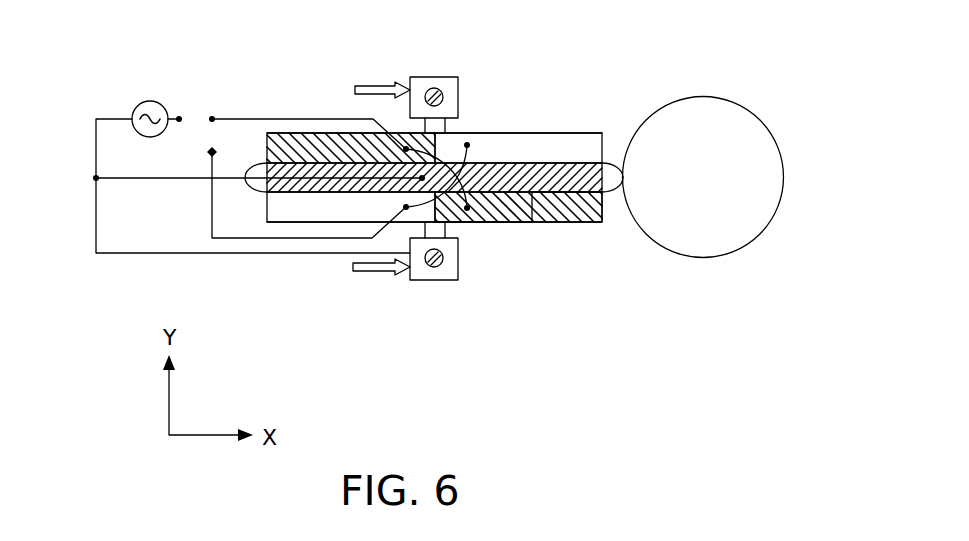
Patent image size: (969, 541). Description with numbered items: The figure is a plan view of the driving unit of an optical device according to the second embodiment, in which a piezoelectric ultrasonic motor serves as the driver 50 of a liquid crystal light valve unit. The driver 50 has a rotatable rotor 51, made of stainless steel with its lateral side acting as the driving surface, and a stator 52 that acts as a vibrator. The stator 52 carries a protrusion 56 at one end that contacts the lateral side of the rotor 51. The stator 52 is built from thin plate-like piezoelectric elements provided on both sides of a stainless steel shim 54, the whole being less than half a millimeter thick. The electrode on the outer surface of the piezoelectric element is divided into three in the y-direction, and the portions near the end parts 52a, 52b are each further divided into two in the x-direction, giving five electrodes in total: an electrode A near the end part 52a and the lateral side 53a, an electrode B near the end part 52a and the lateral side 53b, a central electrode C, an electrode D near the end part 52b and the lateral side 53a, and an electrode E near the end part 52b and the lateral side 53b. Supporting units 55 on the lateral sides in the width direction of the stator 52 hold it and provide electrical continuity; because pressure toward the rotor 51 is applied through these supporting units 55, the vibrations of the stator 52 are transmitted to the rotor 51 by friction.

The driver 50 is at (716, 72).
The rotor 51 is at (724, 248).
The stator 52 is at (549, 130).
The end part 52a is at (596, 133).
The end part 52b is at (560, 223).
The lateral side 53a is at (262, 212).
The lateral side 53b is at (603, 215).
The shim 54 is at (281, 177).
The supporting unit 55 is at (437, 77).
The protrusion 56 is at (610, 158).
The electrode A is at (304, 133).
The electrode B is at (508, 135).
The central electrode C is at (530, 223).
The electrode D is at (300, 216).
The electrode E is at (505, 223).